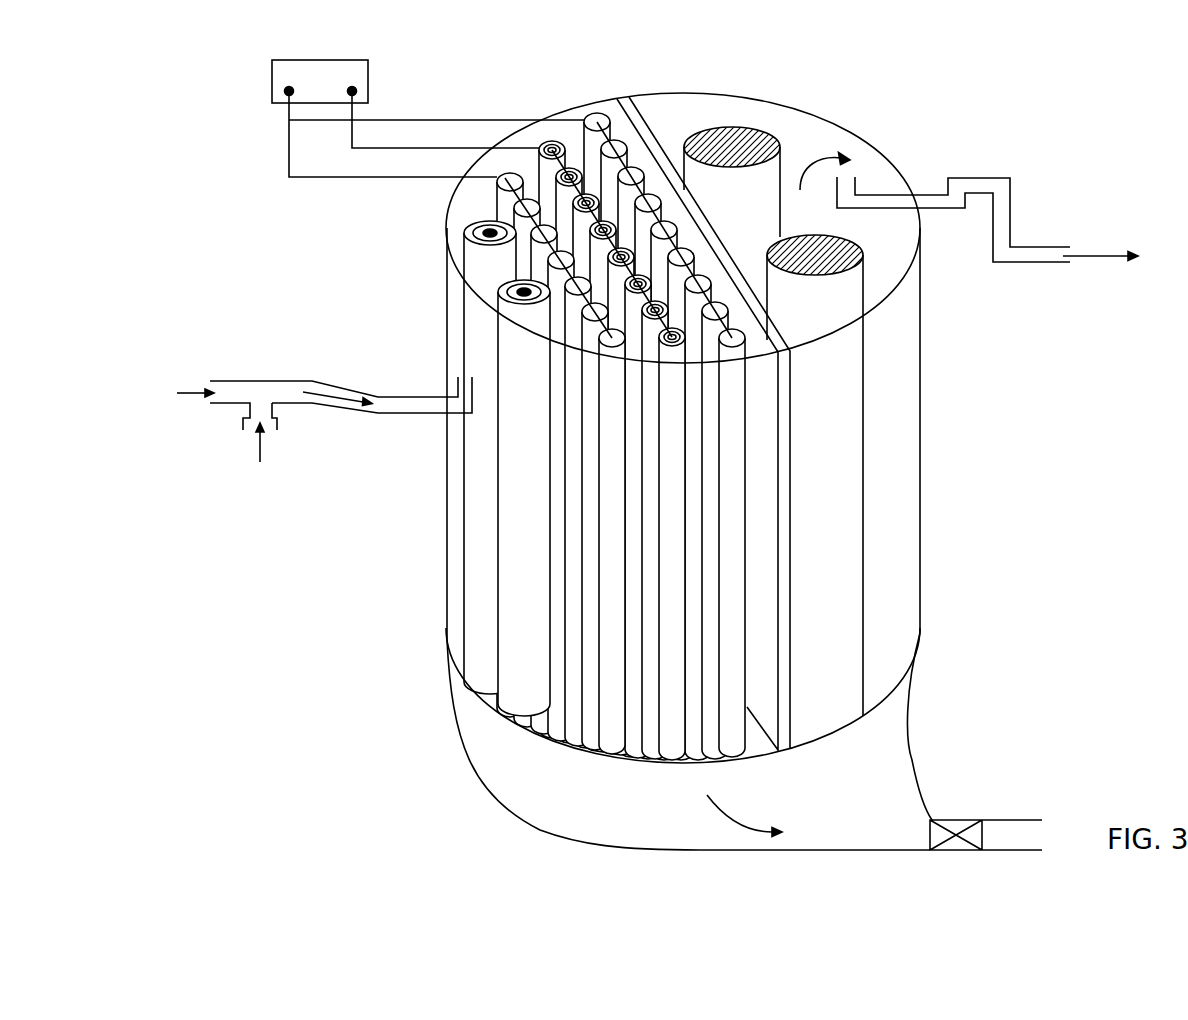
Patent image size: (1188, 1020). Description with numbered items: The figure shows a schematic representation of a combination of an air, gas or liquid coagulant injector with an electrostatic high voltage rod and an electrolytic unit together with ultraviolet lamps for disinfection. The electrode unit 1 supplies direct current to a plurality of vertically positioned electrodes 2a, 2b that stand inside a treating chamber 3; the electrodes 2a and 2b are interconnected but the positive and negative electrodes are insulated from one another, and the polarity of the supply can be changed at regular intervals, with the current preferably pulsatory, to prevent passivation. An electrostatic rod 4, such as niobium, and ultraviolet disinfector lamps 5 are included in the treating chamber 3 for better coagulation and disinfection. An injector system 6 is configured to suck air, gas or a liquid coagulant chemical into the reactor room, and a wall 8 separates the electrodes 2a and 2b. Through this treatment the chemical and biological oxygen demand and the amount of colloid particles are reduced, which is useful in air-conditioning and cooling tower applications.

The electrode unit 1 is at (368, 82).
The electrode 2a is at (420, 147).
The electrode 2b is at (383, 180).
The treating chamber 3 is at (773, 105).
The electrostatic rod 4 is at (498, 283).
The ultraviolet disinfector lamps 5 is at (847, 237).
The injector system 6 is at (278, 390).
The wall 8 is at (792, 535).